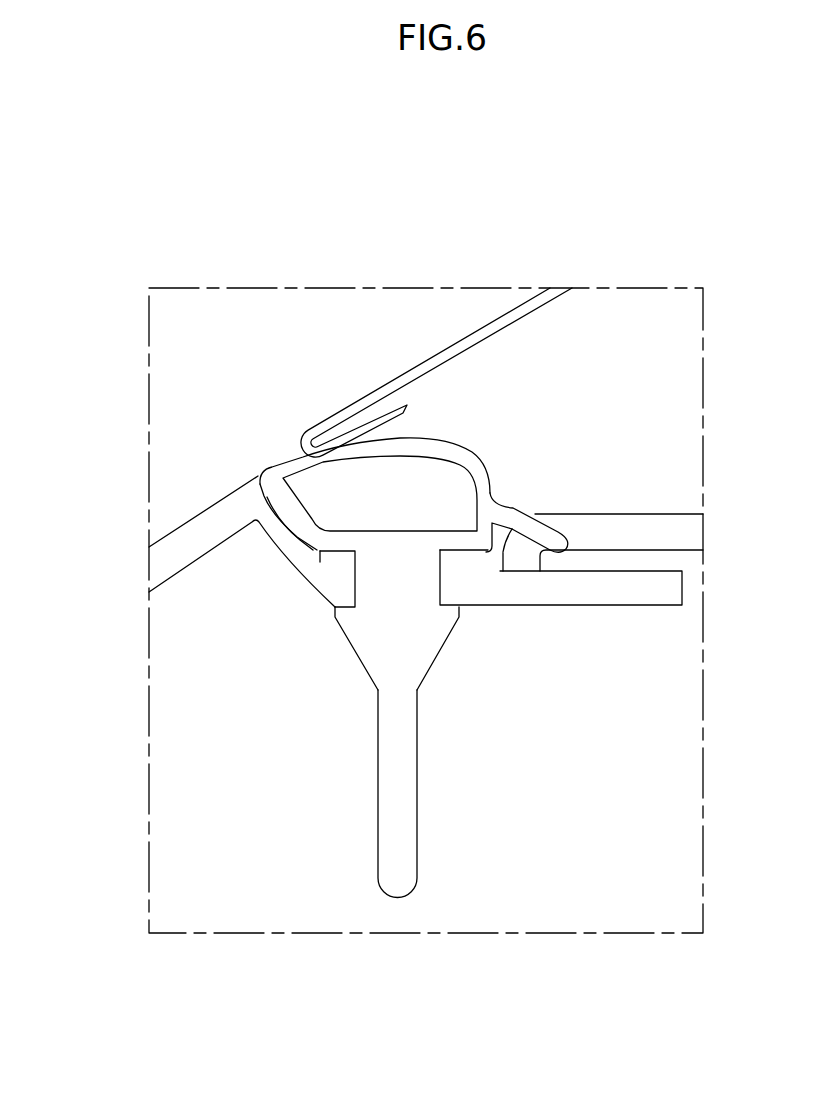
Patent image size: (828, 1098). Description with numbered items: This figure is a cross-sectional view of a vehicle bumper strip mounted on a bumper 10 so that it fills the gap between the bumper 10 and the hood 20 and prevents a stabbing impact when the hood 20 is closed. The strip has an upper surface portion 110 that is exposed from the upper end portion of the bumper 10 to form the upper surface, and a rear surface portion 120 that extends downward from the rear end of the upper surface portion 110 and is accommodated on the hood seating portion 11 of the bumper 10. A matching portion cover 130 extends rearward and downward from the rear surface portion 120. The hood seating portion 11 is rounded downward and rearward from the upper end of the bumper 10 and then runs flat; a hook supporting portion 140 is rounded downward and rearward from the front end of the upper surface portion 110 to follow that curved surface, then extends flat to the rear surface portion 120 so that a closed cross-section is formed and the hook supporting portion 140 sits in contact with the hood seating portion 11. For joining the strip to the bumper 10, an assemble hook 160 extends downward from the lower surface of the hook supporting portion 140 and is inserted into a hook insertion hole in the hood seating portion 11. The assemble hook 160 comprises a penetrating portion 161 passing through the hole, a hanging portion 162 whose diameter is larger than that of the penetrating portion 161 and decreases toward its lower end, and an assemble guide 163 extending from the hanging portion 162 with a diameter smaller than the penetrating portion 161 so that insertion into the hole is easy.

The bumper 10 is at (185, 507).
The hood seating portion 11 is at (320, 551).
The hood 20 is at (485, 333).
The upper surface portion 110 is at (435, 447).
The rear surface portion 120 is at (481, 480).
The matching portion cover 130 is at (515, 512).
The hook supporting portion 140 is at (327, 535).
The assemble hook 160 is at (519, 706).
The penetrating portion 161 is at (417, 572).
The hanging portion 162 is at (428, 660).
The assemble guide 163 is at (459, 794).